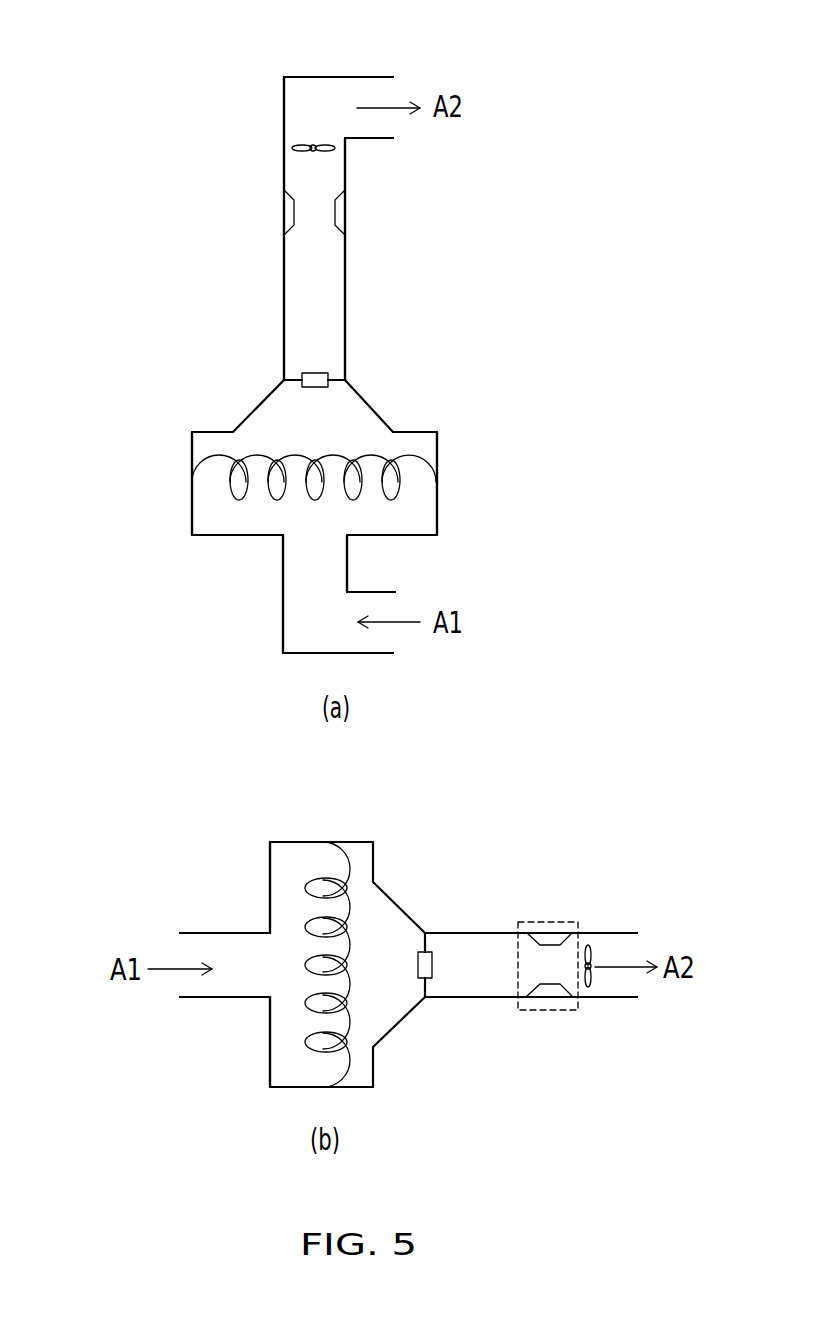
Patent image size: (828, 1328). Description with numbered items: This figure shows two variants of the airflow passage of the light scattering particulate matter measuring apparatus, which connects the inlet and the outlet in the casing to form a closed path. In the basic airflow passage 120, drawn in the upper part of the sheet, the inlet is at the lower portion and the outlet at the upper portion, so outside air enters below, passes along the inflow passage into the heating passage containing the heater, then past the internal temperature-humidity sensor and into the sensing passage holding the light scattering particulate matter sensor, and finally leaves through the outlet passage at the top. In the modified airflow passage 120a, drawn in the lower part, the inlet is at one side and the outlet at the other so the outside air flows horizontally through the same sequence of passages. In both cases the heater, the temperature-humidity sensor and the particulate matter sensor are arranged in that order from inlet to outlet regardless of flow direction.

The airflow passage 120 is at (213, 132).
The airflow passage 120a is at (118, 857).